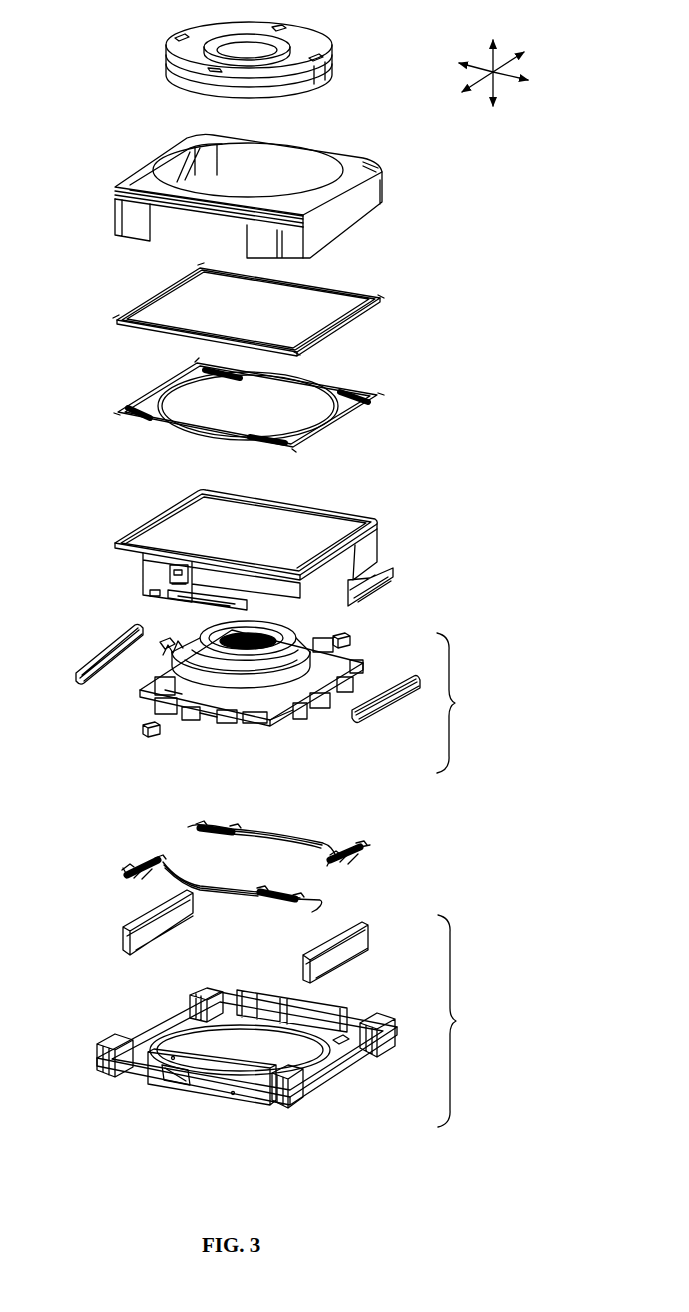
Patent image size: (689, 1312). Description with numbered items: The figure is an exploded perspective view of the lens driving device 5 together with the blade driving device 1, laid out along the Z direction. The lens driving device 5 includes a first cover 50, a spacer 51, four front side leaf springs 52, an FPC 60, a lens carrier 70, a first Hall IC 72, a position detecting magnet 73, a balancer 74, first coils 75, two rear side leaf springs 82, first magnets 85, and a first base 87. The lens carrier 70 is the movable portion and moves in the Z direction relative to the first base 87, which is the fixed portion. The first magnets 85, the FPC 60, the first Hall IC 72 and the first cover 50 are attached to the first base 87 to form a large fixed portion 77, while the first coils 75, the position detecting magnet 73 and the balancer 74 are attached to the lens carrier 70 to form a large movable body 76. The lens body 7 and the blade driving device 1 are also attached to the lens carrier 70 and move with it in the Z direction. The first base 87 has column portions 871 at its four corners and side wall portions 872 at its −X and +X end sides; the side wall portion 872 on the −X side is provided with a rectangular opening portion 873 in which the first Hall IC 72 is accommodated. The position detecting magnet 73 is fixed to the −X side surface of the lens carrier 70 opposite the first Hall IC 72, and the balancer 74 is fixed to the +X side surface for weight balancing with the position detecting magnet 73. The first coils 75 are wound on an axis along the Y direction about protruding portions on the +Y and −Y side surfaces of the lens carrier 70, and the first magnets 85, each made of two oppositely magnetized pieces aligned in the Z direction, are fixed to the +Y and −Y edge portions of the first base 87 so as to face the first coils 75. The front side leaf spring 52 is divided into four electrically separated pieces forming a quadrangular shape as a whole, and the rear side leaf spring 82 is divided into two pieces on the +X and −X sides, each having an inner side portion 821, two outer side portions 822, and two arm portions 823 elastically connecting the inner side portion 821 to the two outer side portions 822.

The blade driving device 1 is at (174, 43).
The lens driving device 5 is at (440, 212).
The first cover 50 is at (158, 162).
The spacer 51 is at (160, 298).
The front side leaf springs 52 is at (173, 376).
The FPC (flexible printed circuit board) 60 is at (165, 515).
The first Hall IC 72 is at (170, 578).
The lens body 7 is at (242, 636).
The lens carrier 70 is at (286, 722).
The position detecting magnet 73 is at (143, 730).
The balancer 74 is at (352, 640).
The first coils 75 is at (106, 646).
The large movable body 76 is at (460, 703).
The large fixed portion 77 is at (462, 1021).
The rear side leaf springs 82 is at (298, 820).
The inner side portion 821 is at (177, 881).
The outer side portions 822 is at (196, 826).
The arm portions 823 is at (205, 830).
The first magnets 85 is at (123, 941).
The first base 87 is at (337, 1083).
The column portions 871 is at (210, 988).
The side wall portions 872 is at (317, 1012).
The opening portion 873 is at (175, 1081).